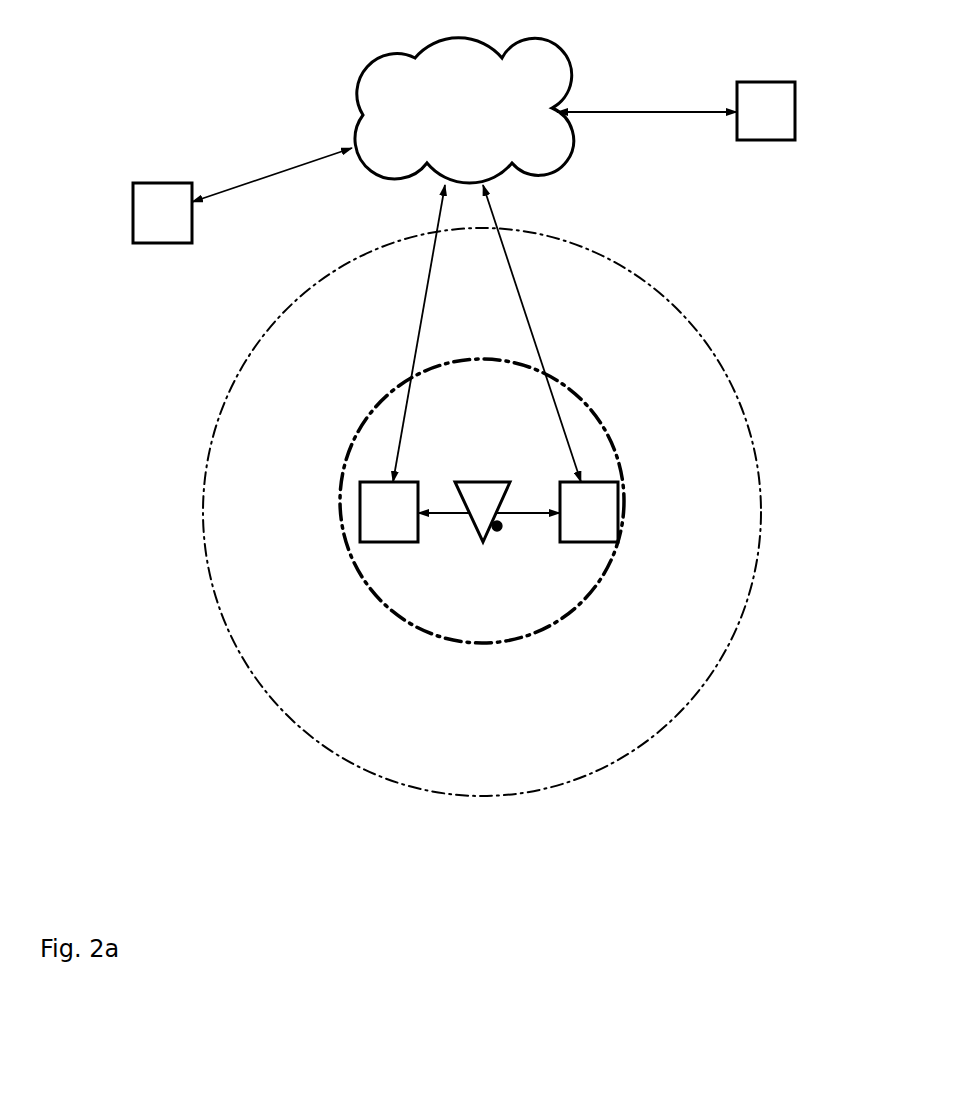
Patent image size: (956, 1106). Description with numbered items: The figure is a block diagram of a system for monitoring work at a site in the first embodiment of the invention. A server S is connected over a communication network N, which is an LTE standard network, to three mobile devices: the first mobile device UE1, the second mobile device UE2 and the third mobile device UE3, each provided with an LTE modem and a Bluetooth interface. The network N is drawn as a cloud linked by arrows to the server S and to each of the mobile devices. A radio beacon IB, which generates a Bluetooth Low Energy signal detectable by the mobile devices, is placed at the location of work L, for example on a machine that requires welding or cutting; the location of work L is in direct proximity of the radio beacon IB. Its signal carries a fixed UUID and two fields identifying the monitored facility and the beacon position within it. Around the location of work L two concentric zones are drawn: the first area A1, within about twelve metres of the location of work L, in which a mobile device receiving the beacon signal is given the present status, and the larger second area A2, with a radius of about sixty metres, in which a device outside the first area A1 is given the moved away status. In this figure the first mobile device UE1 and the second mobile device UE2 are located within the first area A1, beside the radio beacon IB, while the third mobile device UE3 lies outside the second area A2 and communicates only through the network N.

The communication network N is at (557, 53).
The server S is at (795, 93).
The third mobile device UE3 is at (133, 195).
The second mobile device UE2 is at (400, 542).
The first mobile device UE1 is at (575, 542).
The radio beacon IB is at (472, 482).
The location of work L is at (499, 530).
The first area A1 is at (377, 593).
The second area A2 is at (755, 572).